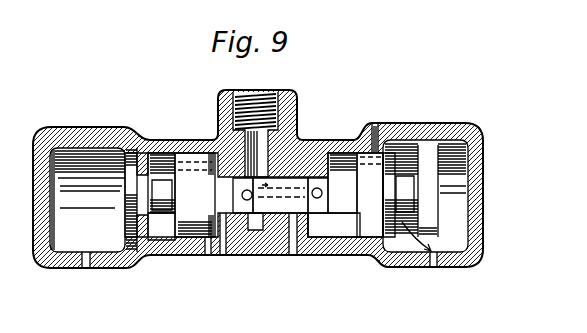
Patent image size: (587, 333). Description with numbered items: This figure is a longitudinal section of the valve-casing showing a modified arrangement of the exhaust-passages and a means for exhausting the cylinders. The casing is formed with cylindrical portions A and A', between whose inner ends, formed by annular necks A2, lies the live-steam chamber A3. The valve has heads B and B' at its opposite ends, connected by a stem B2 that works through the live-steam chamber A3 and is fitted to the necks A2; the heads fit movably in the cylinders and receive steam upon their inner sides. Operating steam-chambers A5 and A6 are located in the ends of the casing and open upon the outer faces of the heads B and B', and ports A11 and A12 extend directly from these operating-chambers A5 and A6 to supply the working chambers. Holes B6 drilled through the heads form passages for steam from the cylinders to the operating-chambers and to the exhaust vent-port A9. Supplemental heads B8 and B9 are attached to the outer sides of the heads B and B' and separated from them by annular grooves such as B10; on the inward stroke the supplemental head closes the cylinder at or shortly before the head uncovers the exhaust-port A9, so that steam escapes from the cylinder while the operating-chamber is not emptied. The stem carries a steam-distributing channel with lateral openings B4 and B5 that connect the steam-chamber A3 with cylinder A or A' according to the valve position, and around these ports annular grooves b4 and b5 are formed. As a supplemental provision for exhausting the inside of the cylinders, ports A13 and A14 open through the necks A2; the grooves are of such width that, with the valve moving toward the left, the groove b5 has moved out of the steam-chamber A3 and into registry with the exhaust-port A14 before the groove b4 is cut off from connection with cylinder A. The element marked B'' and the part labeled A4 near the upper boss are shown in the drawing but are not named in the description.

The cylindrical portion A is at (258, 179).
The operating steam-chamber A6 is at (87, 200).
The supplemental head B9 is at (131, 200).
The valve piston portion B'' is at (161, 160).
The cylindrical portion A' is at (161, 226).
The head B' is at (195, 195).
The spring loaded stem A4 is at (264, 133).
The live-steam chamber A3 is at (258, 222).
The annular groove b5 is at (243, 187).
The annular groove b4 is at (322, 180).
The lateral opening B5 is at (243, 228).
The exhaust-port A14 is at (222, 258).
The exhaust-port A13 is at (293, 257).
The annular neck A2 is at (208, 250).
The port A12 is at (86, 268).
The port A11 is at (433, 260).
The exhaust vent-port A9 is at (375, 138).
The lateral opening B4 is at (312, 232).
The stem B2 is at (342, 183).
The head B is at (370, 195).
The hole B6 is at (368, 160).
The operating steam-chamber A5 is at (425, 196).
The supplemental head B8 is at (425, 190).
The annular groove B10 is at (405, 194).